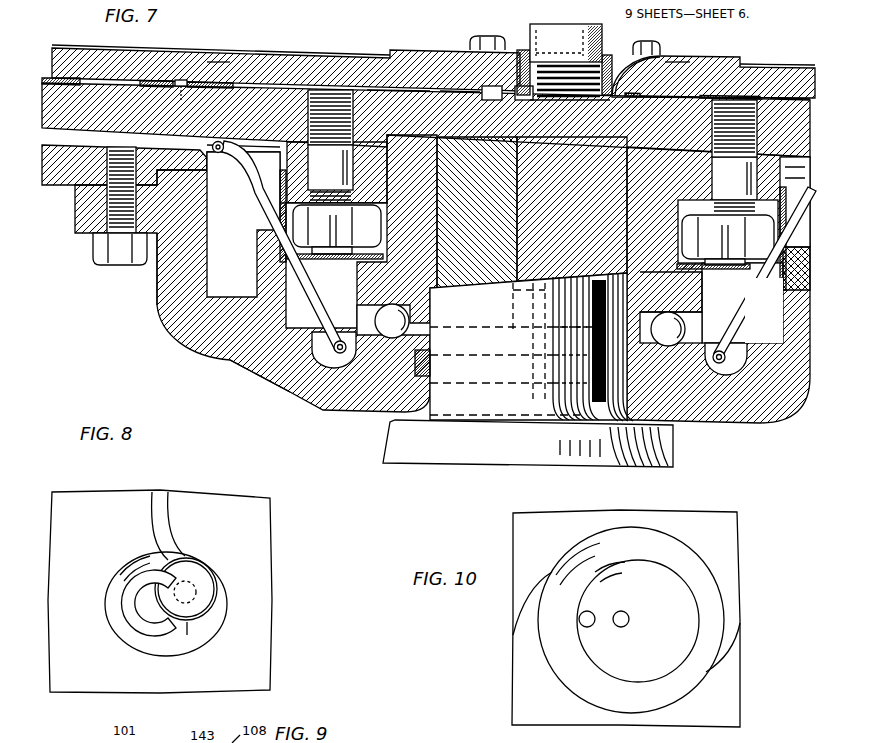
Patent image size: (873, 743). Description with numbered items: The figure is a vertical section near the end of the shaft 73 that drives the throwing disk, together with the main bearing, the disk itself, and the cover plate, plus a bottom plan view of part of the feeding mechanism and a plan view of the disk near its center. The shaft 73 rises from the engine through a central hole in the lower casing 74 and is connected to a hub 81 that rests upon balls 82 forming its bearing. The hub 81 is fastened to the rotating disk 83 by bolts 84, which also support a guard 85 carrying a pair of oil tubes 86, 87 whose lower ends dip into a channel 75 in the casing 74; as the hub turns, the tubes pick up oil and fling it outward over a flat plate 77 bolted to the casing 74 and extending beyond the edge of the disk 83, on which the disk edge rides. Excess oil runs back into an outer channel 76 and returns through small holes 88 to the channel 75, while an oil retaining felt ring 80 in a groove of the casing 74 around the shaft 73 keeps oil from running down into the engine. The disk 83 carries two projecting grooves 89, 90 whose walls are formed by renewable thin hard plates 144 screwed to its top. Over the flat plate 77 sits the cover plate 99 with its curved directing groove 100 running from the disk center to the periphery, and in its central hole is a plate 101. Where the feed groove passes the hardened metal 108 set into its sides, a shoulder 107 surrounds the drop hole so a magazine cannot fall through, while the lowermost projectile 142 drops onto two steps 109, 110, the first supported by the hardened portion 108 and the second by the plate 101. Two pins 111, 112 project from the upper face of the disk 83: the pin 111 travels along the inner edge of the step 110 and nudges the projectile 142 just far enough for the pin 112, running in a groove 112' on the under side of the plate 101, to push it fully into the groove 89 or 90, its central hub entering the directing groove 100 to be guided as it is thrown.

In FIG. 7, the shaft 73 is at (440, 411).
In FIG. 7, the lower casing 74 is at (690, 418).
In FIG. 7, the channel 75 is at (332, 360).
In FIG. 7, the outer channel 76 is at (217, 288).
In FIG. 7, the flat plate 77 is at (53, 180).
In FIG. 7, the oil retaining felt ring 80 is at (432, 362).
In FIG. 7, the hub 81 is at (672, 287).
In FIG. 7, the balls 82 is at (402, 315).
In FIG. 7, the rotating disk 83 is at (227, 107).
In FIG. 10, the rotating disk 83 is at (725, 543).
In FIG. 7, the bolts 84 is at (533, 177).
In FIG. 7, the guard 85 is at (347, 258).
In FIG. 7, the oil tube 86 is at (318, 279).
In FIG. 7, the oil tube 87 is at (764, 310).
In FIG. 7, the small holes 88 is at (267, 310).
In FIG. 7, the projecting groove 89 is at (128, 73).
In FIG. 7, the projecting groove 90 is at (290, 56).
In FIG. 7, the cover plate 99 is at (207, 62).
In FIG. 8, the directing groove 100 is at (170, 516).
In FIG. 7, the plate 101 is at (673, 62).
In FIG. 7, the shoulder 107 is at (623, 57).
In FIG. 7, the hardened metal 108 is at (602, 57).
In FIG. 8, the step 109 is at (192, 593).
In FIG. 8, the step 110 is at (186, 597).
In FIG. 10, the pin 111 is at (621, 628).
In FIG. 10, the pin 112 is at (596, 634).
In FIG. 8, the groove 112' is at (122, 603).
In FIG. 8, the projectile 142 is at (187, 622).
In FIG. 7, the thin hard plate 144 is at (183, 82).